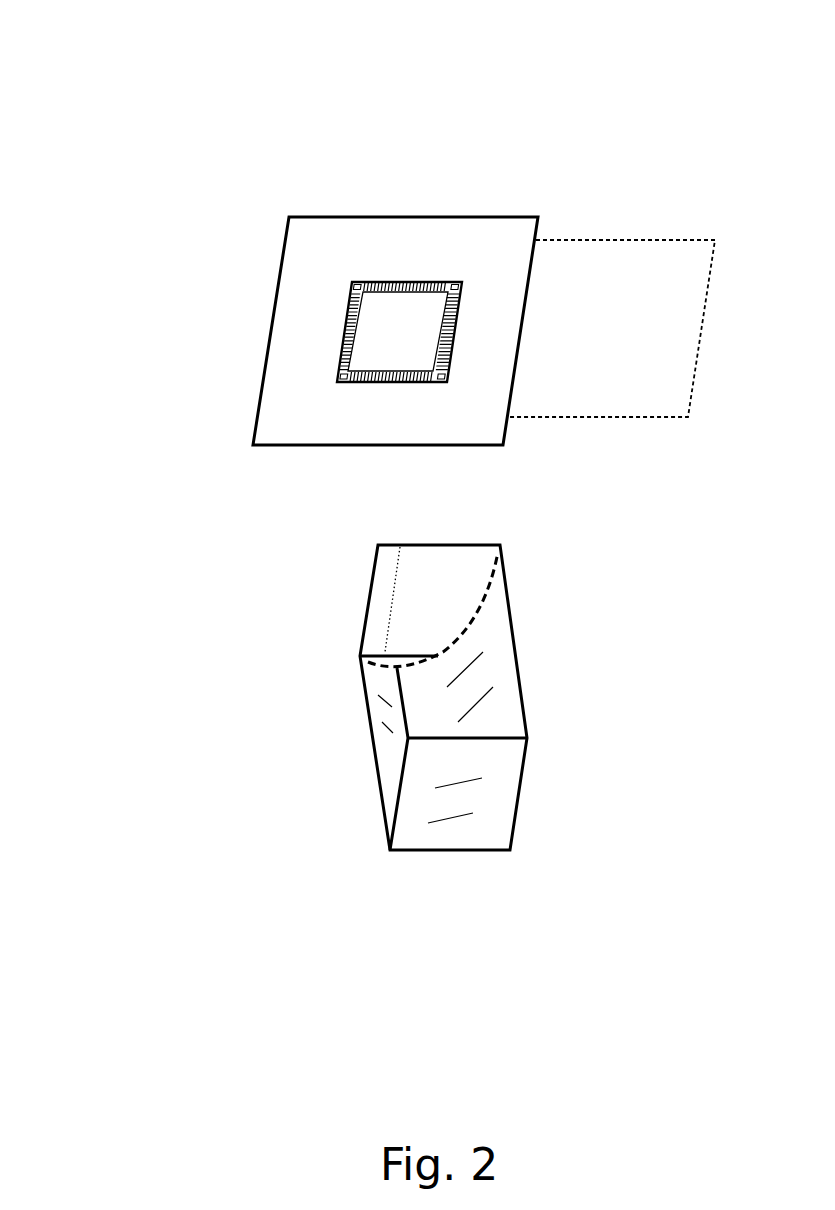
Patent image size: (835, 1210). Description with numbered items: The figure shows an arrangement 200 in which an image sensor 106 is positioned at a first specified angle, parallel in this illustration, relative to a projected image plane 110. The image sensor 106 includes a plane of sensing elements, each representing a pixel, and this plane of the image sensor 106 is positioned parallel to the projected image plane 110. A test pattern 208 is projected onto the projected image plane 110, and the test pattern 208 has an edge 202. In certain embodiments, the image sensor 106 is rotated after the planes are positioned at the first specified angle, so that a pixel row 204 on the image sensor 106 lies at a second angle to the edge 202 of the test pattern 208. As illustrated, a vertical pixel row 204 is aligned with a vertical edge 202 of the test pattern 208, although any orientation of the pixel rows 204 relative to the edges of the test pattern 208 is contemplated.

The assembly 200 is at (86, 68).
The edge of the test pattern 202 is at (368, 274).
The test pattern 208 is at (432, 307).
The projected image plane 110 is at (662, 236).
The image sensor 106 is at (460, 608).
The pixel row 204 is at (395, 585).